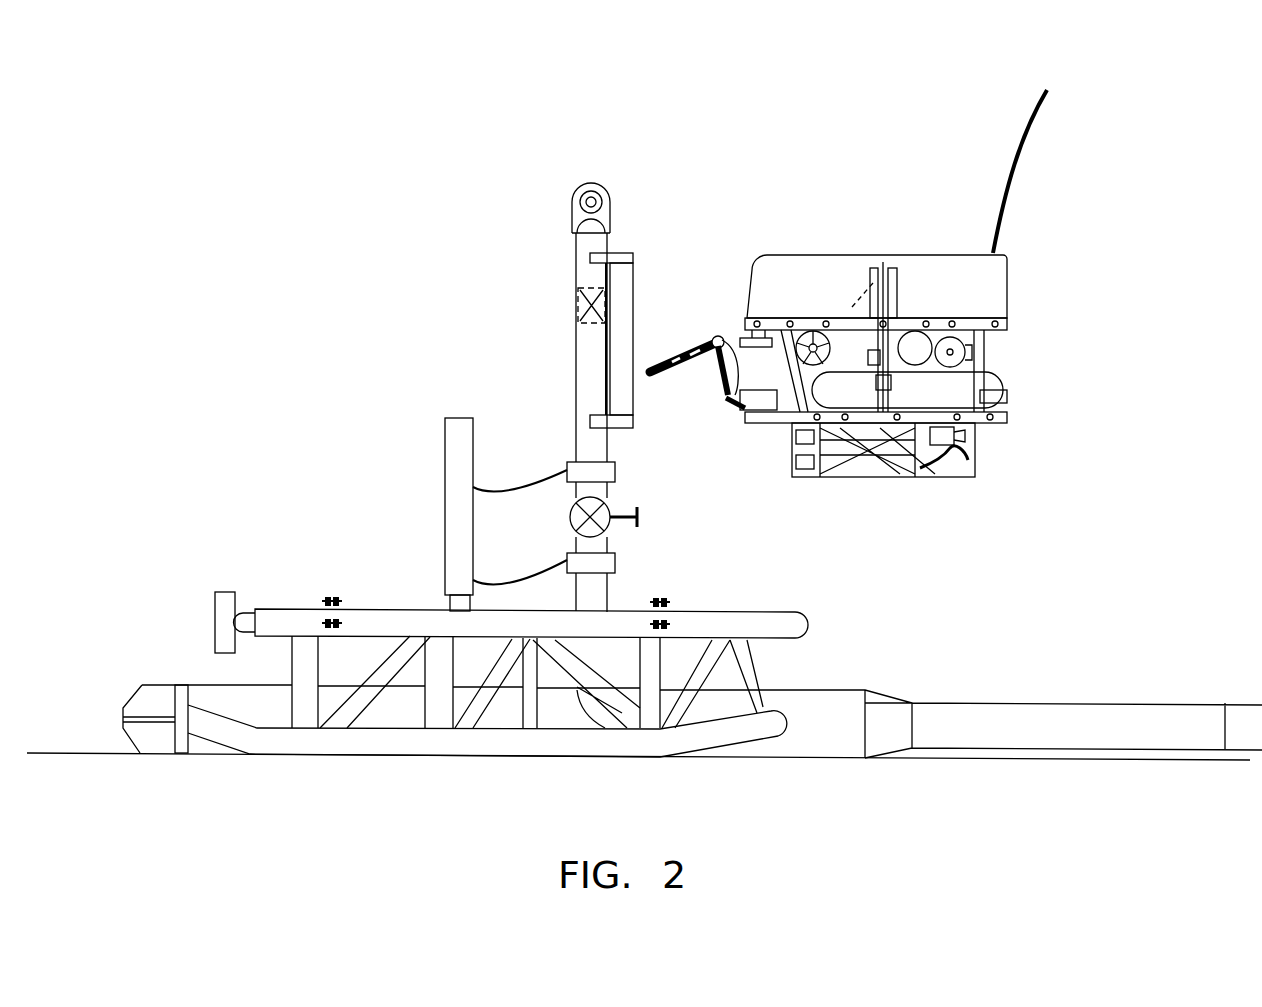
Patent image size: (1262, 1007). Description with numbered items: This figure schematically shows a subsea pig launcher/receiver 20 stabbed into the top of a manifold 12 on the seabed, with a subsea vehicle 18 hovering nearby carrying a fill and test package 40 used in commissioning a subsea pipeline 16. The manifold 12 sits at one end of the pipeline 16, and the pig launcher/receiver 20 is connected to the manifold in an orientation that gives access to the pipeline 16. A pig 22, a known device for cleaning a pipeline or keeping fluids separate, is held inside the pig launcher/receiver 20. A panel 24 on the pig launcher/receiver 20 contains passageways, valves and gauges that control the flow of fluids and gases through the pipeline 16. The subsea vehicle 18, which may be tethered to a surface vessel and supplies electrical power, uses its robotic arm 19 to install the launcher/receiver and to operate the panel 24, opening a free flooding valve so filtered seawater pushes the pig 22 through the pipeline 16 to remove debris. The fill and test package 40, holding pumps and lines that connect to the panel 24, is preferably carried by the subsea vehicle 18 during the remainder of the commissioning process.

The manifold 12 is at (393, 525).
The subsea pipeline 16 is at (975, 693).
The subsea vehicle 18 is at (990, 283).
The robotic arm 19 is at (716, 400).
The subsea pig launcher/receiver 20 is at (572, 362).
The pig 22 is at (575, 303).
The panel 24 is at (622, 248).
The fill and test package 40 is at (990, 453).